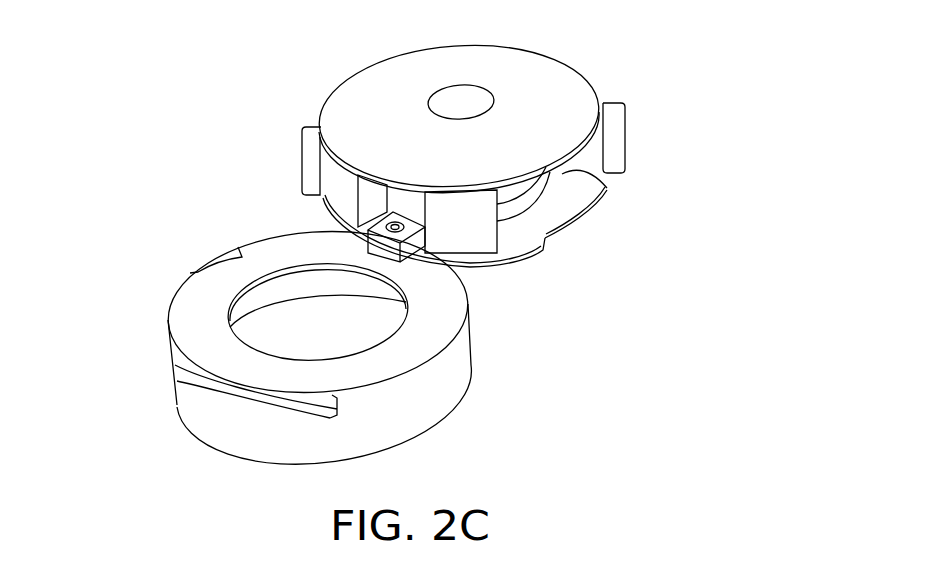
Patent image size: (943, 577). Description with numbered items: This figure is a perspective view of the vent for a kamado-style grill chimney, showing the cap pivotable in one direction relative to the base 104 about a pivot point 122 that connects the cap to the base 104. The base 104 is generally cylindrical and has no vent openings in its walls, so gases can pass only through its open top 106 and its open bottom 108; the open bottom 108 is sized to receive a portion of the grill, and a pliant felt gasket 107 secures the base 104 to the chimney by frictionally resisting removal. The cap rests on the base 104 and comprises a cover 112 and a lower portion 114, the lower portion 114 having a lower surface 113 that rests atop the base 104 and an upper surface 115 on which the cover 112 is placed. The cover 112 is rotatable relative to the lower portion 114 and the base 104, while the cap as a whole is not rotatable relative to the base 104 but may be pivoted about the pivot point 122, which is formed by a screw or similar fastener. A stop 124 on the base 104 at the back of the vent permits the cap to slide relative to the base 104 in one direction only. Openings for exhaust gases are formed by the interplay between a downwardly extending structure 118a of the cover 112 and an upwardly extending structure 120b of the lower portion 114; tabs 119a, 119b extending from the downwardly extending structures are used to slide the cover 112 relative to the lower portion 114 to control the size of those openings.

The base 104 is at (417, 405).
The open top 106 is at (233, 305).
The gasket 107 is at (267, 310).
The open bottom 108 is at (340, 325).
The cover 112 is at (557, 73).
The lower surface 113 is at (610, 179).
The lower portion 114 is at (580, 192).
The upper surface 115 is at (596, 203).
The downwardly extending structure 118a is at (398, 203).
The tab 119a is at (310, 155).
The tab 119b is at (612, 163).
The upwardly extending structure 120b is at (460, 227).
The pivot point 122 is at (368, 231).
The stop 124 is at (198, 272).